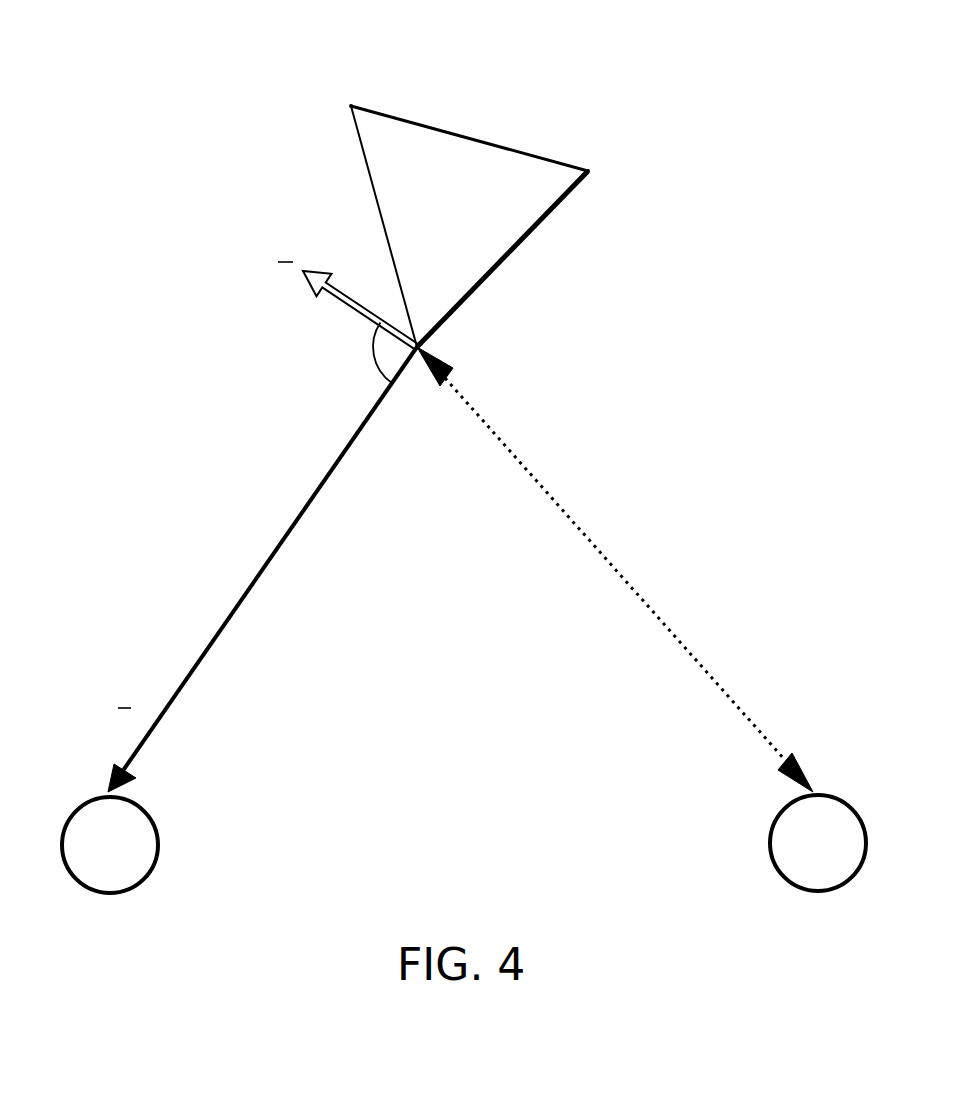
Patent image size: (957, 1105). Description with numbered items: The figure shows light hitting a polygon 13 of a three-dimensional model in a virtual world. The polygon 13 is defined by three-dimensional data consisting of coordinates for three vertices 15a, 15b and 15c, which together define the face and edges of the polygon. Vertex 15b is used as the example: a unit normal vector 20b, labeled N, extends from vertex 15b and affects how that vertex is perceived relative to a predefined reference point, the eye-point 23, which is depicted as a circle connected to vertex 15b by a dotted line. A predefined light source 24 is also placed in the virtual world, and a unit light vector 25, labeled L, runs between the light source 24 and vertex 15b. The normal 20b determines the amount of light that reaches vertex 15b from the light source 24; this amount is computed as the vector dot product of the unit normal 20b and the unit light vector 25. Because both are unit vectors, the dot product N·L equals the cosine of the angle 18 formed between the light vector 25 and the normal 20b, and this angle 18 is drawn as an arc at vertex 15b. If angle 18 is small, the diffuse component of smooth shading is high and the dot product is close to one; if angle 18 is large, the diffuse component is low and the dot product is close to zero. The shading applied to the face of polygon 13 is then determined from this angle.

The polygon 13 is at (493, 243).
The vertex 15a is at (590, 171).
The vertex 15b is at (427, 346).
The vertex 15c is at (352, 105).
The angle 18 is at (370, 357).
The unit normal vector 20b is at (357, 312).
The eye-point 23 is at (828, 878).
The light source 24 is at (87, 873).
The unit light vector 25 is at (305, 510).